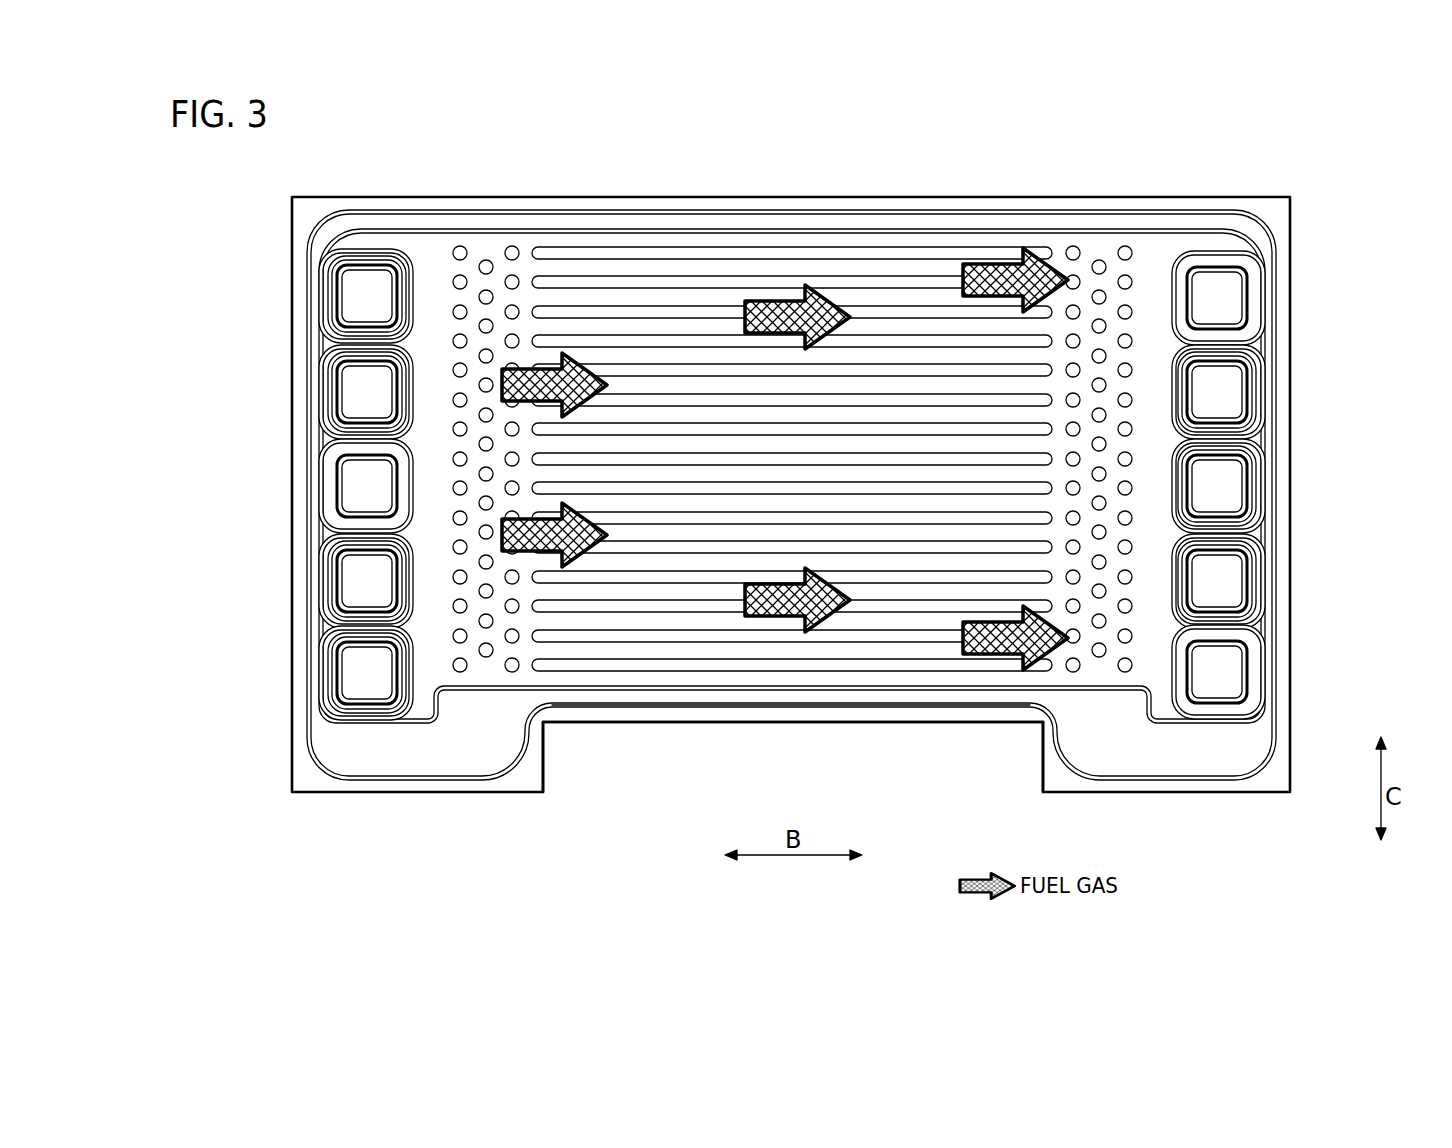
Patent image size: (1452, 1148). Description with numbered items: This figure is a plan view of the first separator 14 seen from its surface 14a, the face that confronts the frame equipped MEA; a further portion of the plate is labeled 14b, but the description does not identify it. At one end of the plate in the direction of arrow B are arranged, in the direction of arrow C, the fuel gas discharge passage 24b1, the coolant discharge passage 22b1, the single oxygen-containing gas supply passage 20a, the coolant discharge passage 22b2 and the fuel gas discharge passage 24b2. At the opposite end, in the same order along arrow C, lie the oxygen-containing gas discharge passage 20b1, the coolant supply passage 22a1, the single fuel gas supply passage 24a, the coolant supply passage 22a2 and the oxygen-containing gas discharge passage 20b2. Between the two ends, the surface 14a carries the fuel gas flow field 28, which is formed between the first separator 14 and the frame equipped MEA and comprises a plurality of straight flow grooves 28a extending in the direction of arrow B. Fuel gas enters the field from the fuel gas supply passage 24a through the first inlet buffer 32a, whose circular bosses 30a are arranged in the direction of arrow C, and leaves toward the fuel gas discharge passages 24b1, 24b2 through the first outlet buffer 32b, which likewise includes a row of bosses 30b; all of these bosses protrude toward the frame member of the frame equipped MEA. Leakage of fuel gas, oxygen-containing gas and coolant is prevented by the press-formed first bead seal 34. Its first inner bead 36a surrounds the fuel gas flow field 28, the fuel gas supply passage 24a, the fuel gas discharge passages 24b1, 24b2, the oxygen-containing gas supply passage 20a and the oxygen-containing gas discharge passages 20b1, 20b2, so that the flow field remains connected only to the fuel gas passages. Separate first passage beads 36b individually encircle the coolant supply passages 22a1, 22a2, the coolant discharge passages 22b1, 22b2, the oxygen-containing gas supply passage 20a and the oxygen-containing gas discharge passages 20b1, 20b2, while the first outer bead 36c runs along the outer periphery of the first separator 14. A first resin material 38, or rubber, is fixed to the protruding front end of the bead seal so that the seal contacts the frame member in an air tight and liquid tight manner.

The first separator 14 is at (349, 156).
The surface 14a is at (1062, 780).
The end portion of second separator 14b is at (530, 780).
The oxygen-containing gas supply passage 20a is at (1228, 488).
The oxygen-containing gas discharge passage 20b1 is at (362, 298).
The oxygen-containing gas discharge passage 20b2 is at (360, 684).
The coolant supply passage 22a1 is at (360, 400).
The coolant supply passage 22a2 is at (360, 596).
The coolant discharge passage 22b1 is at (1230, 396).
The coolant discharge passage 22b2 is at (1228, 578).
The fuel gas supply passage 24a is at (360, 481).
The fuel gas discharge passage 24b1 is at (1228, 290).
The fuel gas discharge passage 24b2 is at (1230, 680).
The fuel gas flow field 28 is at (792, 412).
The straight flow grooves 28a is at (693, 298).
The bosses 30a is at (460, 246).
The bosses 30b is at (1125, 246).
The first inlet buffer 32a is at (512, 247).
The first outlet buffer 32b is at (1077, 247).
The first bead seal 34 is at (693, 695).
The first inner bead 36a is at (880, 688).
The first passage beads 36b is at (346, 257).
The first outer bead 36c is at (937, 706).
The first resin material 38 is at (801, 708).